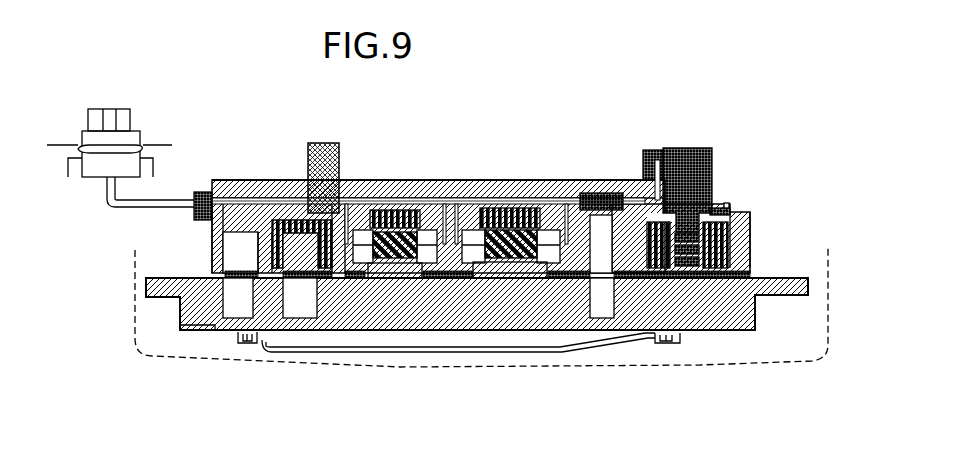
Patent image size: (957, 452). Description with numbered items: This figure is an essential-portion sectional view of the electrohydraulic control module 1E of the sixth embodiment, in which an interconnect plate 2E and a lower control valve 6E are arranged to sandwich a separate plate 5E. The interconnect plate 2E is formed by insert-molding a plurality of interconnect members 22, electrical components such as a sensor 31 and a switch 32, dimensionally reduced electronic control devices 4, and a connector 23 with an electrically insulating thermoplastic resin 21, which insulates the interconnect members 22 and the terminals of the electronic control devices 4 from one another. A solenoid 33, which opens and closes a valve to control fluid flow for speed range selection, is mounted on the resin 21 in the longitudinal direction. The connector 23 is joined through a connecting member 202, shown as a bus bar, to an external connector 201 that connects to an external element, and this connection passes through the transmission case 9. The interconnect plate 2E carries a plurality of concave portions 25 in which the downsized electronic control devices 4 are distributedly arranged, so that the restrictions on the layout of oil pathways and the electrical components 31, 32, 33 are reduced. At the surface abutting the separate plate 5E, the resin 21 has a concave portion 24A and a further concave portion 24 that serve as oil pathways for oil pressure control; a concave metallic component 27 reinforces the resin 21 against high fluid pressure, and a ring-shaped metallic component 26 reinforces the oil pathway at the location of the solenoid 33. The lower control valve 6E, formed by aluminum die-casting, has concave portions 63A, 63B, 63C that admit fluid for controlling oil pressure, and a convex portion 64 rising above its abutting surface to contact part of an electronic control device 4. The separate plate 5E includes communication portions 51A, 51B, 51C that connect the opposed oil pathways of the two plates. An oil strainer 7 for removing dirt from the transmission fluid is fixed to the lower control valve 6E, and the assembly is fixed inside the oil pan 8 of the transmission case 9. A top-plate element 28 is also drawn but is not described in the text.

The electrohydraulic control module 1E is at (628, 79).
The interconnect plate 2E is at (448, 178).
The electronic control device 4 is at (404, 212).
The separate plate 5E is at (766, 276).
The lower control valve 6E is at (808, 278).
The oil strainer 7 is at (622, 346).
The oil pan 8 is at (828, 305).
The transmission case 9 is at (69, 145).
The external connector 201 is at (138, 132).
The connecting member 202 is at (127, 207).
The resin 21 is at (255, 180).
The interconnect member 22 is at (230, 180).
The connector 23 is at (200, 192).
The concave portion 24 is at (634, 182).
The concave portion 24A is at (213, 243).
The concave portion 25 is at (358, 198).
The ring-shaped metallic component 26 is at (382, 210).
The concave metallic component 27 is at (281, 198).
The top plate 28 is at (540, 180).
The sensor 31 is at (326, 143).
The switch 32 is at (598, 192).
The solenoid 33 is at (712, 160).
The communication portion 51A is at (238, 280).
The communication portion 51B is at (303, 279).
The communication portion 51C is at (603, 279).
The concave portion 63A is at (192, 333).
The concave portion 63B is at (257, 352).
The concave portion 63C is at (597, 330).
The convex portion 64 is at (385, 266).